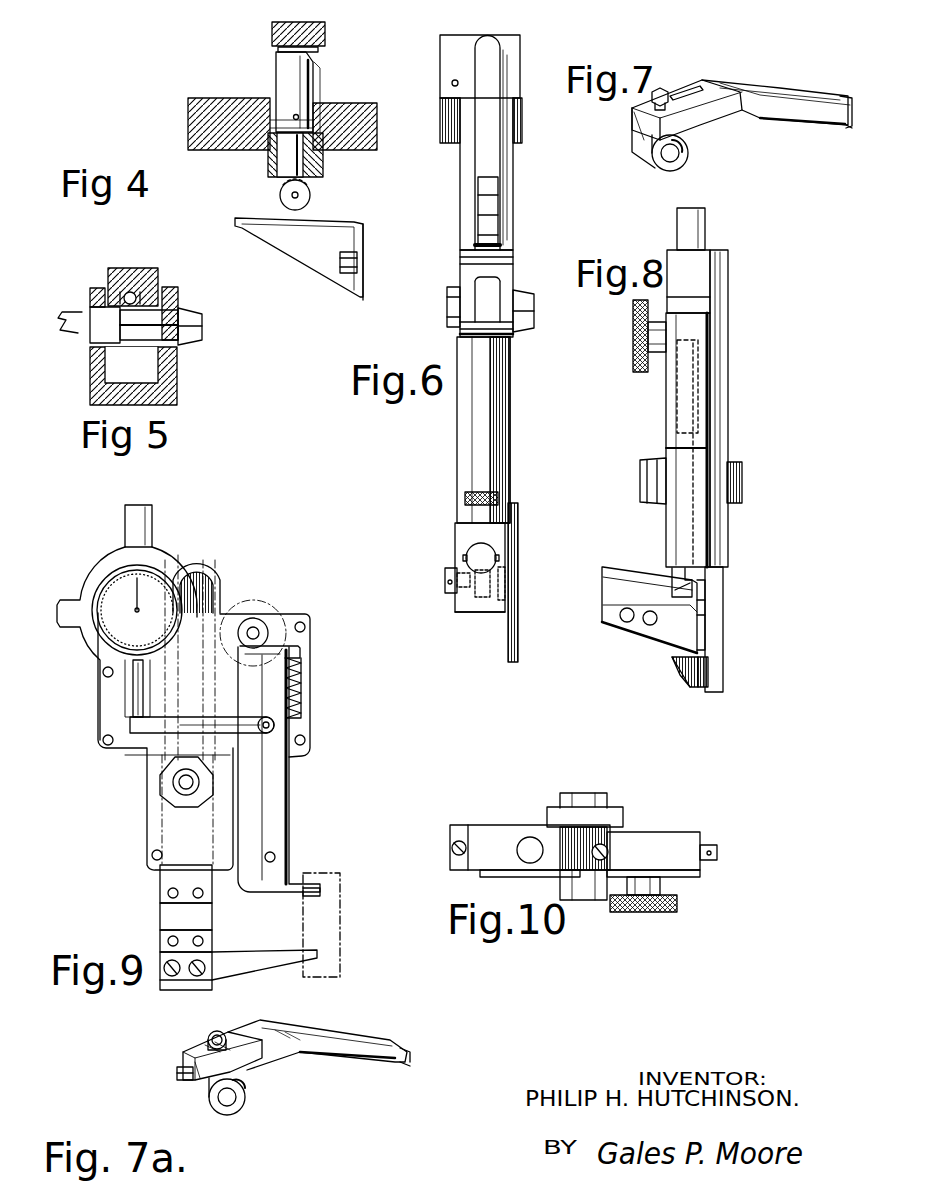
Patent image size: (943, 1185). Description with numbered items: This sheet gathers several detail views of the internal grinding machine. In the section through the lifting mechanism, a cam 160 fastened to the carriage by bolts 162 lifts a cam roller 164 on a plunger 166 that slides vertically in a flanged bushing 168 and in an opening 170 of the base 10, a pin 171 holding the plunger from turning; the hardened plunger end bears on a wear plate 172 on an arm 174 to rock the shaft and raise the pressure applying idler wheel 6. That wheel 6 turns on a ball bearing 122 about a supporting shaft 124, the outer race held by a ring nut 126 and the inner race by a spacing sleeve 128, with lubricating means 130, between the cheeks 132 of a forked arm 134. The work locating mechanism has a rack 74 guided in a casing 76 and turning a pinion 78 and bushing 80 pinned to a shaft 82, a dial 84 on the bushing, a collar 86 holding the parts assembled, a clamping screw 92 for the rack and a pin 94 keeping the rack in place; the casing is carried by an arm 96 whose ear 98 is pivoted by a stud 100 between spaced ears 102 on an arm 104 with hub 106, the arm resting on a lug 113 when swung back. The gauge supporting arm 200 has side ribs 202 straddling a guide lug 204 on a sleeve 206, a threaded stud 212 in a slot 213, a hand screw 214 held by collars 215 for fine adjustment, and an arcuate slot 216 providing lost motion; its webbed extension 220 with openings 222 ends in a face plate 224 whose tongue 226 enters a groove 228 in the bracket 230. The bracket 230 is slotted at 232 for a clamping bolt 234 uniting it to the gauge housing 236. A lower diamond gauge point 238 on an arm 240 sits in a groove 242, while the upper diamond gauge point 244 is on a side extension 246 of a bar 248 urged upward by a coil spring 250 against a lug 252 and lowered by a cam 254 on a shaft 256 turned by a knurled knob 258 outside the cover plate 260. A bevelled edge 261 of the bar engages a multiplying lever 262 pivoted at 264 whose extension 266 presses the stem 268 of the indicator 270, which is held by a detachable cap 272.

In FIG. 5, the pressure applying idler wheel 6 is at (133, 268).
In FIG. 4, the base 10 is at (377, 122).
In FIG. 6, the rack 74 is at (475, 555).
In FIG. 6, the casing 76 is at (457, 612).
In FIG. 6, the pinion 78 is at (478, 600).
In FIG. 6, the bushing 80 is at (500, 608).
In FIG. 6, the shaft 82 is at (457, 587).
In FIG. 6, the dial 84 is at (518, 635).
In FIG. 6, the collar 86 is at (445, 583).
In FIG. 6, the clamping screw 92 is at (498, 498).
In FIG. 6, the pin 94 is at (463, 558).
In FIG. 6, the arm 96 is at (465, 440).
In FIG. 6, the ear 98 is at (490, 290).
In FIG. 6, the stud 100 is at (448, 320).
In FIG. 6, the spaced ears 102 is at (515, 340).
In FIG. 6, the arm 104 is at (513, 172).
In FIG. 6, the hub 106 is at (440, 58).
In FIG. 6, the lug 113 is at (498, 220).
In FIG. 5, the ball bearing 122 is at (140, 288).
In FIG. 5, the supporting shaft 124 is at (95, 333).
In FIG. 5, the ring nut 126 is at (178, 292).
In FIG. 5, the spacing sleeve 128 is at (170, 353).
In FIG. 5, the lubricating means 130 is at (68, 312).
In FIG. 5, the cheeks 132 is at (95, 288).
In FIG. 5, the forked arm 134 is at (178, 386).
In FIG. 4, the cam 160 is at (302, 224).
In FIG. 4, the bolts 162 is at (357, 262).
In FIG. 4, the cam roller 164 is at (309, 193).
In FIG. 4, the plunger 166 is at (288, 73).
In FIG. 4, the flanged bushing 168 is at (333, 160).
In FIG. 4, the opening 170 is at (320, 103).
In FIG. 4, the pin 171 is at (294, 115).
In FIG. 4, the wear plate 172 is at (318, 50).
In FIG. 4, the arm 174 is at (325, 37).
In FIG. 7, the inclined arm 200 is at (687, 110).
In FIG. 7A, the inclined arm 200 is at (222, 1056).
In FIG. 7, the side ribs 202 is at (632, 128).
In FIG. 7, the guide lug 204 is at (632, 115).
In FIG. 7, the sleeve 206 is at (654, 160).
In FIG. 7A, the sleeve 206 is at (232, 1115).
In FIG. 7, the threaded stud 212 is at (663, 92).
In FIG. 7A, the threaded stud 212 is at (208, 1034).
In FIG. 7, the slot 213 is at (690, 90).
In FIG. 7A, the hand screw 214 is at (177, 1075).
In FIG. 7A, the collars 215 is at (195, 1082).
In FIG. 7, the arcuate slot 216 is at (688, 150).
In FIG. 7A, the arcuate slot 216 is at (248, 1087).
In FIG. 7, the webbed extension 220 is at (800, 82).
In FIG. 8, the webbed extension 220 is at (649, 610).
In FIG. 7A, the webbed extension 220 is at (330, 1032).
In FIG. 7, the openings 222 is at (800, 122).
In FIG. 8, the openings 222 is at (627, 622).
In FIG. 7A, the openings 222 is at (370, 1062).
In FIG. 7, the face plate 224 is at (848, 128).
In FIG. 8, the face plate 224 is at (700, 640).
In FIG. 7A, the face plate 224 is at (408, 1068).
In FIG. 7, the central tongue 226 is at (848, 97).
In FIG. 8, the central tongue 226 is at (703, 612).
In FIG. 7A, the central tongue 226 is at (410, 1055).
In FIG. 8, the groove 228 is at (705, 595).
In FIG. 9, the groove 228 is at (168, 910).
In FIG. 8, the gauge carrying bracket 230 is at (723, 590).
In FIG. 9, the gauge carrying bracket 230 is at (170, 880).
In FIG. 10, the gauge carrying bracket 230 is at (560, 820).
In FIG. 9, the slot 232 is at (210, 580).
In FIG. 8, the clamping bolt 234 is at (691, 481).
In FIG. 9, the clamping bolt 234 is at (182, 785).
In FIG. 10, the clamping bolt 234 is at (570, 793).
In FIG. 8, the gauge housing 236 is at (715, 517).
In FIG. 9, the gauge housing 236 is at (170, 832).
In FIG. 10, the gauge housing 236 is at (650, 838).
In FIG. 8, the diamond gauge point 238 is at (678, 665).
In FIG. 9, the diamond gauge point 238 is at (340, 960).
In FIG. 8, the arm 240 is at (688, 684).
In FIG. 9, the arm 240 is at (258, 958).
In FIG. 8, the groove 242 is at (708, 668).
In FIG. 9, the groove 242 is at (190, 950).
In FIG. 8, the diamond gauge point 244 is at (690, 587).
In FIG. 9, the diamond gauge point 244 is at (318, 890).
In FIG. 10, the diamond gauge point 244 is at (717, 850).
In FIG. 9, the side extension 246 is at (258, 880).
In FIG. 9, the bar 248 is at (262, 833).
In FIG. 9, the coil spring 250 is at (298, 688).
In FIG. 9, the lug 252 is at (290, 652).
In FIG. 9, the cam 254 is at (262, 625).
In FIG. 9, the shaft 256 is at (260, 632).
In FIG. 8, the knurled knob 258 is at (636, 360).
In FIG. 10, the knurled knob 258 is at (677, 905).
In FIG. 8, the cover plate 260 is at (670, 420).
In FIG. 10, the cover plate 260 is at (700, 875).
In FIG. 9, the bevelled edge 261 is at (270, 745).
In FIG. 9, the multiplying lever 262 is at (195, 742).
In FIG. 9, the pivot 264 is at (275, 728).
In FIG. 9, the extension 266 is at (130, 727).
In FIG. 9, the stem 268 is at (133, 693).
In FIG. 9, the indicator 270 is at (97, 637).
In FIG. 8, the detachable cap 272 is at (690, 262).
In FIG. 9, the detachable cap 272 is at (100, 570).
In FIG. 10, the detachable cap 272 is at (490, 833).